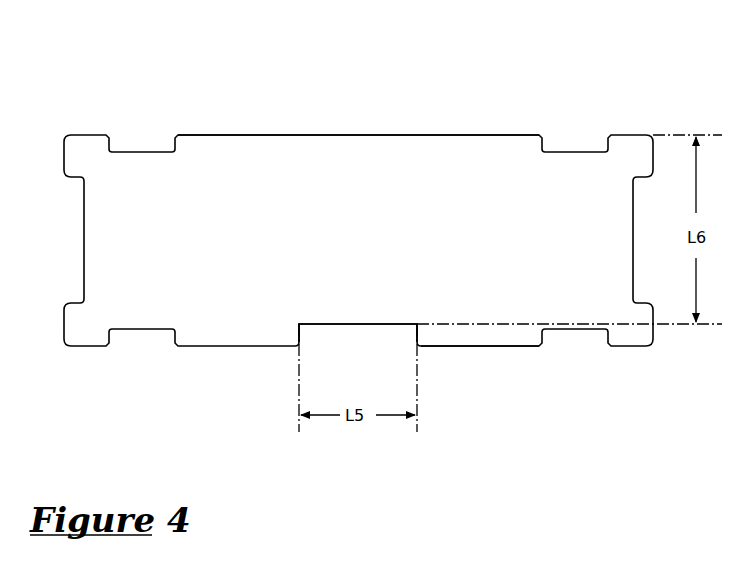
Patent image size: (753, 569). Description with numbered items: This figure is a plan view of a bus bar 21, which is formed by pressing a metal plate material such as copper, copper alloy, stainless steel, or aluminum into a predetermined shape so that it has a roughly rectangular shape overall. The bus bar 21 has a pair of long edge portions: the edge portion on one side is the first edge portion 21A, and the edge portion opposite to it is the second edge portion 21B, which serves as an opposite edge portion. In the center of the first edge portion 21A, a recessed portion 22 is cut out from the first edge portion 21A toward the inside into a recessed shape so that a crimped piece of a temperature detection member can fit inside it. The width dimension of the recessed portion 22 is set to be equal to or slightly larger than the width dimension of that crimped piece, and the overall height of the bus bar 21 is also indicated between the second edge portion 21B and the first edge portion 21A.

The bus bar 21 is at (483, 110).
The first edge portion 21A is at (483, 346).
The second edge portion 21B is at (264, 135).
The recessed portion 22 is at (349, 325).